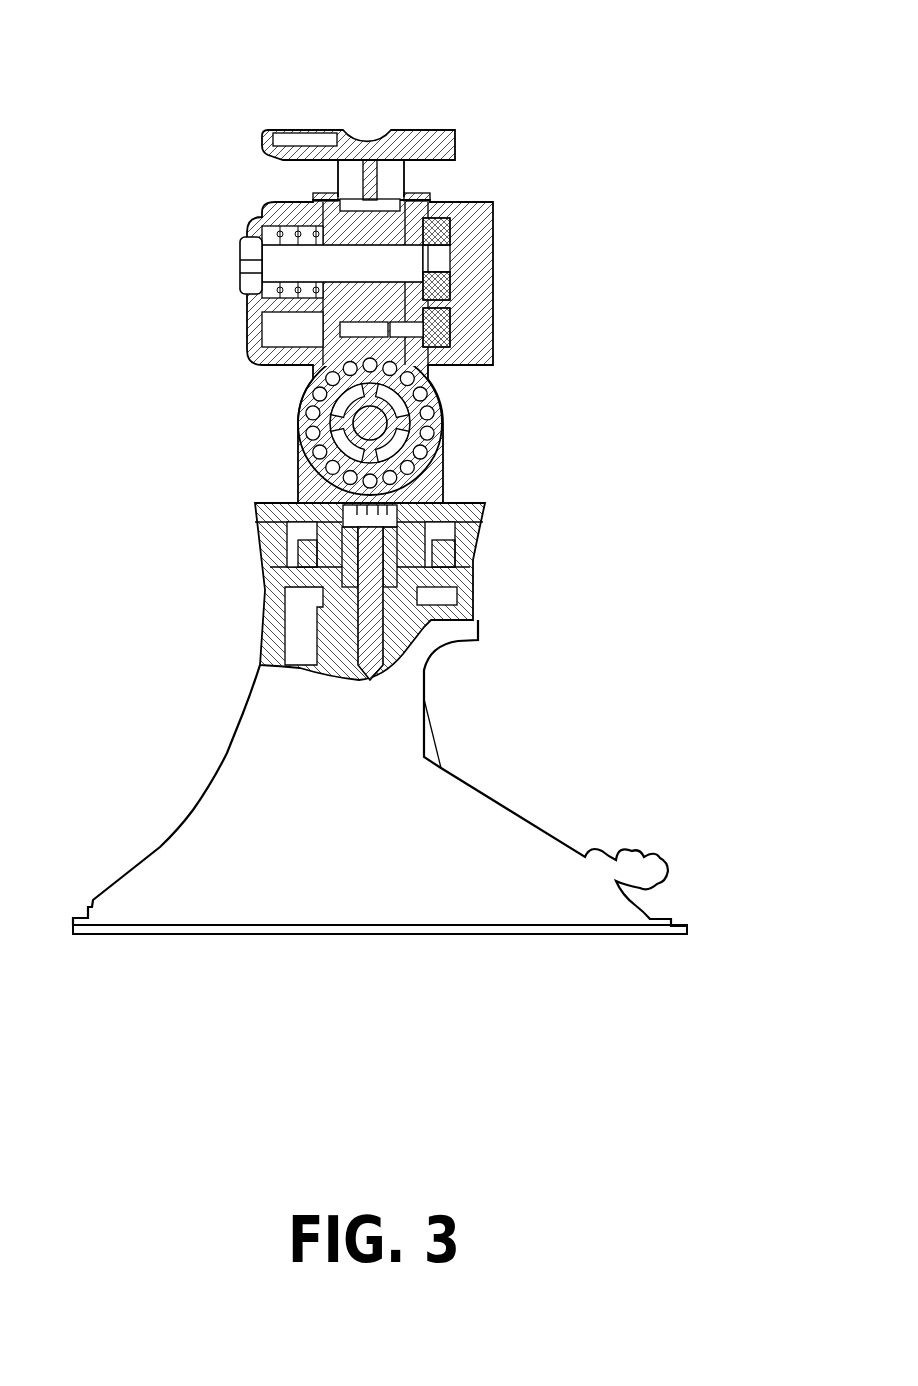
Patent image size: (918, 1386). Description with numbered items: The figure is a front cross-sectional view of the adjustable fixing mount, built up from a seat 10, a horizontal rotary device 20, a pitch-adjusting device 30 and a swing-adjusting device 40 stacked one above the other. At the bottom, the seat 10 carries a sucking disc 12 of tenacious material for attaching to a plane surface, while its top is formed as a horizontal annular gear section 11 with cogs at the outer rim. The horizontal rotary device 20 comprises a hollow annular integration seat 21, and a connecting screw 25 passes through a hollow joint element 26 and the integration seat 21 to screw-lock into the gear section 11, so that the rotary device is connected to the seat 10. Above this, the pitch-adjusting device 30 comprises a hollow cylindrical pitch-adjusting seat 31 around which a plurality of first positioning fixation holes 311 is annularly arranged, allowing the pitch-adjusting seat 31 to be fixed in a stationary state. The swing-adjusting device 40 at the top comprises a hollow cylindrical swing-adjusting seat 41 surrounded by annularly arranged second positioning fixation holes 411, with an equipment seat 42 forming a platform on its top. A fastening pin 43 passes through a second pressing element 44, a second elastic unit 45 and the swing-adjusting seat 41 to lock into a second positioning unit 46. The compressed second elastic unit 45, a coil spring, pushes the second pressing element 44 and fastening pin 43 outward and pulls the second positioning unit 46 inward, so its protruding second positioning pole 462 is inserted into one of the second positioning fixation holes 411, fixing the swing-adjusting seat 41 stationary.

The seat 10 is at (223, 753).
The horizontal annular gear section 11 is at (285, 537).
The sucking disc 12 is at (678, 922).
The horizontal rotary device 20 is at (273, 500).
The integration seat 21 is at (290, 525).
The connecting screw 25 is at (375, 598).
The hollow joint element 26 is at (420, 520).
The pitch-adjusting device 30 is at (522, 348).
The pitch-adjusting seat 31 is at (433, 395).
The first positioning fixation holes 311 is at (430, 432).
The swing-adjusting device 40 is at (460, 145).
The swing-adjusting seat 41 is at (398, 177).
The second positioning fixation holes 411 is at (340, 205).
The equipment seat 42 is at (433, 135).
The fastening pin 43 is at (285, 257).
The second pressing element 44 is at (257, 325).
The second elastic unit 45 is at (273, 295).
The second positioning unit 46 is at (467, 263).
The second positioning pole 462 is at (395, 323).